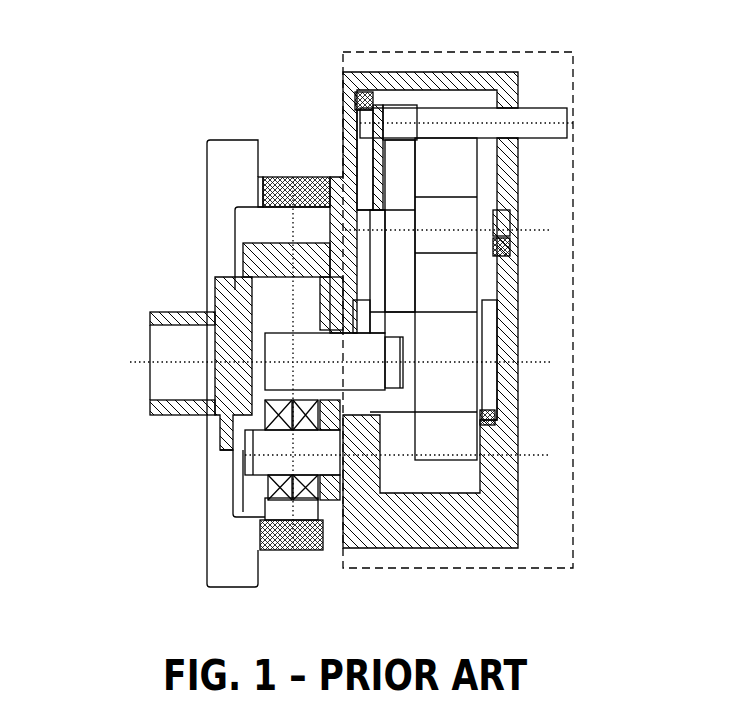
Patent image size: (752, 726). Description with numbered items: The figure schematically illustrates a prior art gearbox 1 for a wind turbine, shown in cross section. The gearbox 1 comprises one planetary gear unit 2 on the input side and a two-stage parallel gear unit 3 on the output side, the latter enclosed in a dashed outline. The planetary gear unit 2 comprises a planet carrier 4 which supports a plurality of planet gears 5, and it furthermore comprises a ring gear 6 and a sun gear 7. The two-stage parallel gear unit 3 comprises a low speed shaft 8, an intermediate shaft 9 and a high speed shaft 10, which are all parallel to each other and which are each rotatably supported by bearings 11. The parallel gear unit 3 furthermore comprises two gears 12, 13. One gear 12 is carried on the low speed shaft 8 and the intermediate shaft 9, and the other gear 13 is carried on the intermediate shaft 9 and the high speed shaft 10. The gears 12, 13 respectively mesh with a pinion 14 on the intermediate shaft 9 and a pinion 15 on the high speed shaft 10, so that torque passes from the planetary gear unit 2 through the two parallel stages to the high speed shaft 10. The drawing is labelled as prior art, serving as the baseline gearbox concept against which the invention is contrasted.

The gearbox 1 is at (150, 70).
The planetary gear unit 2 is at (292, 558).
The two-stage parallel gear unit 3 is at (573, 458).
The planet carrier 4 is at (258, 257).
The planet gears 5 is at (273, 505).
The ring gear 6 is at (277, 182).
The sun gear 7 is at (273, 352).
The low speed shaft 8 is at (485, 335).
The intermediate shaft 9 is at (497, 222).
The high speed shaft 10 is at (547, 118).
The bearings 11 is at (485, 418).
The gear 12 is at (468, 283).
The gear 13 is at (397, 177).
The pinion 14 is at (453, 212).
The pinion 15 is at (397, 117).